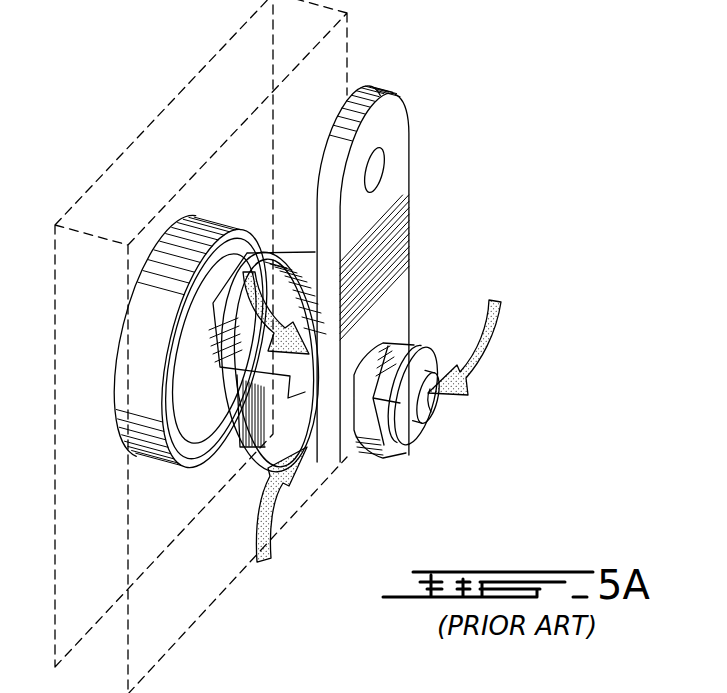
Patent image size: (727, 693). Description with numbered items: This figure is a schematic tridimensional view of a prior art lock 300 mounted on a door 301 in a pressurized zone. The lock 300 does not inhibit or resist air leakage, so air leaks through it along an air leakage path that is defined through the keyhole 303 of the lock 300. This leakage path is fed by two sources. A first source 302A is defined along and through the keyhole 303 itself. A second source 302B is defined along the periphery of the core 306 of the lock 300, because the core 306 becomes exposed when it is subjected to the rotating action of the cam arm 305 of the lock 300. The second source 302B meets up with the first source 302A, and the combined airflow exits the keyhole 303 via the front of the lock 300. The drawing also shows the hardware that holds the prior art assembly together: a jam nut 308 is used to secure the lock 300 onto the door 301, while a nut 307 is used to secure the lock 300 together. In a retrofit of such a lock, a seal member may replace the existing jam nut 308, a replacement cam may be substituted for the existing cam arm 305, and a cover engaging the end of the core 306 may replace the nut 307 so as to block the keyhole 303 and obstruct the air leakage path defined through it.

The lock 300 is at (311, 494).
The door 301 is at (347, 40).
The first source of the air leakage path 302A is at (497, 343).
The second source of the air leakage path 302B is at (268, 537).
The keyhole 303 is at (431, 398).
The cam arm 305 is at (383, 218).
The core 306 is at (402, 448).
The nut 307 is at (408, 346).
The jam nut 308 is at (210, 432).